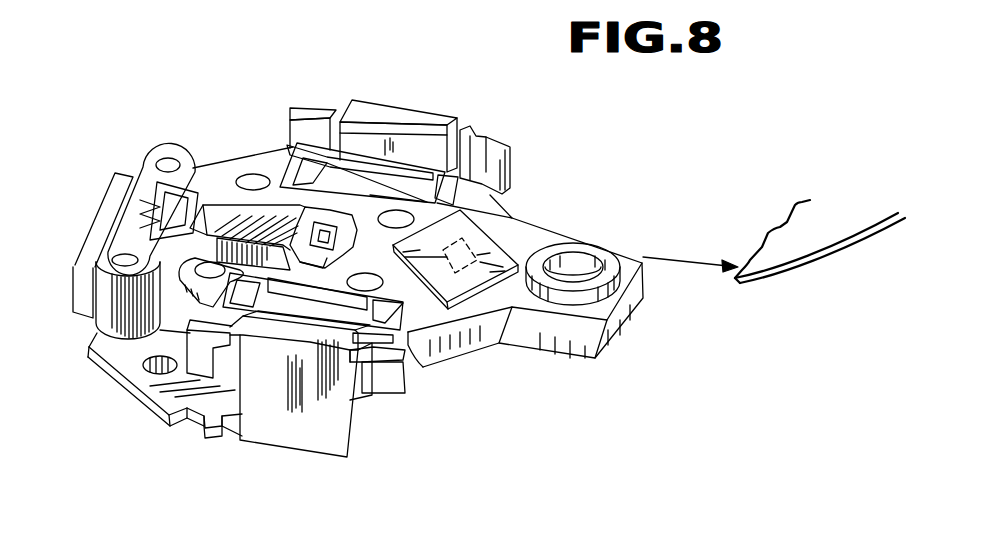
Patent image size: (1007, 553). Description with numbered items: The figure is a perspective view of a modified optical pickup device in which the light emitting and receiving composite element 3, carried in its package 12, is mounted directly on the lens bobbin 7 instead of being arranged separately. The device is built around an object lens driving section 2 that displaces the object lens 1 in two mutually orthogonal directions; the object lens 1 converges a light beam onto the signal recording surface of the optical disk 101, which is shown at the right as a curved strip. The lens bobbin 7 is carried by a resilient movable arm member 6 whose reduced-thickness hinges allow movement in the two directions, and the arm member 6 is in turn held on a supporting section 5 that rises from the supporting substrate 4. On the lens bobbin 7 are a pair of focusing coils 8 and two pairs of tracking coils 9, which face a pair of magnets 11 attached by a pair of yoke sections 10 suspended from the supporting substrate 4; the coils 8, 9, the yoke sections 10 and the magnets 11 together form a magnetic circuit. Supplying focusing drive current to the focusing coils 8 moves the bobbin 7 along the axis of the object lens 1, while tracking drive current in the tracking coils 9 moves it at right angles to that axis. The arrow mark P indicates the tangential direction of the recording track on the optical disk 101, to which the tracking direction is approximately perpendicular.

The object lens 1 is at (613, 293).
The object lens driving section 2 is at (108, 402).
The light emitting and receiving composite element 3 is at (478, 242).
The supporting substrate 4 is at (93, 341).
The supporting section 5 is at (107, 297).
The movable arm member 6 is at (230, 207).
The lens bobbin 7 is at (445, 337).
The focusing coils 8 is at (291, 165).
The tracking coils 9 is at (322, 142).
The yoke sections 10 is at (388, 112).
The magnets 11 is at (407, 148).
The package 12 is at (465, 287).
The optical disk 101 is at (813, 232).
The arrow mark P is at (683, 257).